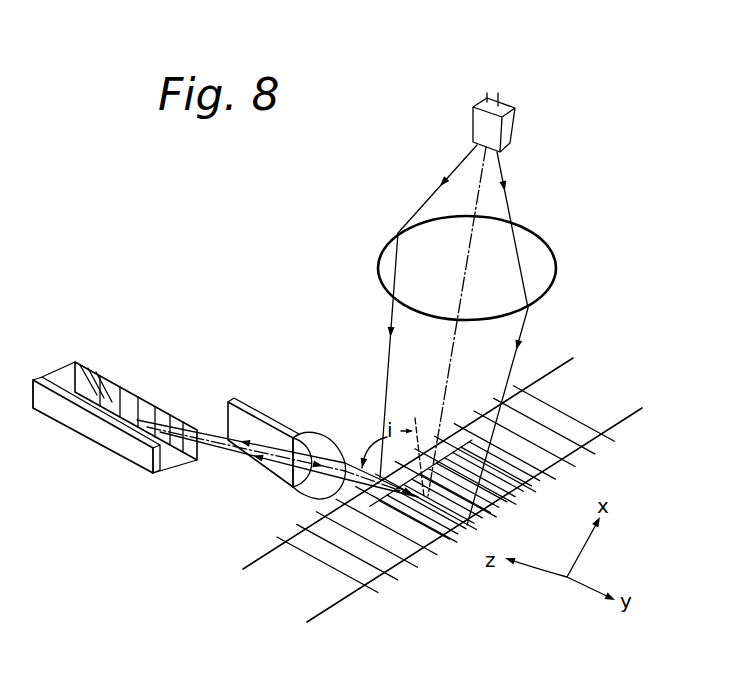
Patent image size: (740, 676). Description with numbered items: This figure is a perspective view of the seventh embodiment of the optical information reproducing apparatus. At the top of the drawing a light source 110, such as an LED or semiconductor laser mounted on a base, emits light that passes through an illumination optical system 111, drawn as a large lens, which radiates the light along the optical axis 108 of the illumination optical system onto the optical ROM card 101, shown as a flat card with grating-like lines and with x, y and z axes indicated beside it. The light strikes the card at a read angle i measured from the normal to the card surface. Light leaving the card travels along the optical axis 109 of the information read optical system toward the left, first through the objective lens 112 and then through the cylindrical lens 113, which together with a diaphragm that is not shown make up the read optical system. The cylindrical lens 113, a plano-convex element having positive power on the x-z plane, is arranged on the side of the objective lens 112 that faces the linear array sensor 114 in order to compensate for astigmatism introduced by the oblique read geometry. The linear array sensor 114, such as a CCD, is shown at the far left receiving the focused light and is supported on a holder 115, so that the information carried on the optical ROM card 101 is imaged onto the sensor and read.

The optical ROM card 101 is at (604, 405).
The optical axis of the illumination optical system 108 is at (456, 353).
The optical axis of the information read optical system 109 is at (237, 453).
The light source 110 is at (512, 130).
The illumination optical system 111 is at (533, 243).
The objective lens 112 is at (313, 430).
The cylindrical lens 113 is at (246, 405).
The linear array sensor 114 is at (92, 363).
The photodetector holder 115 is at (80, 427).